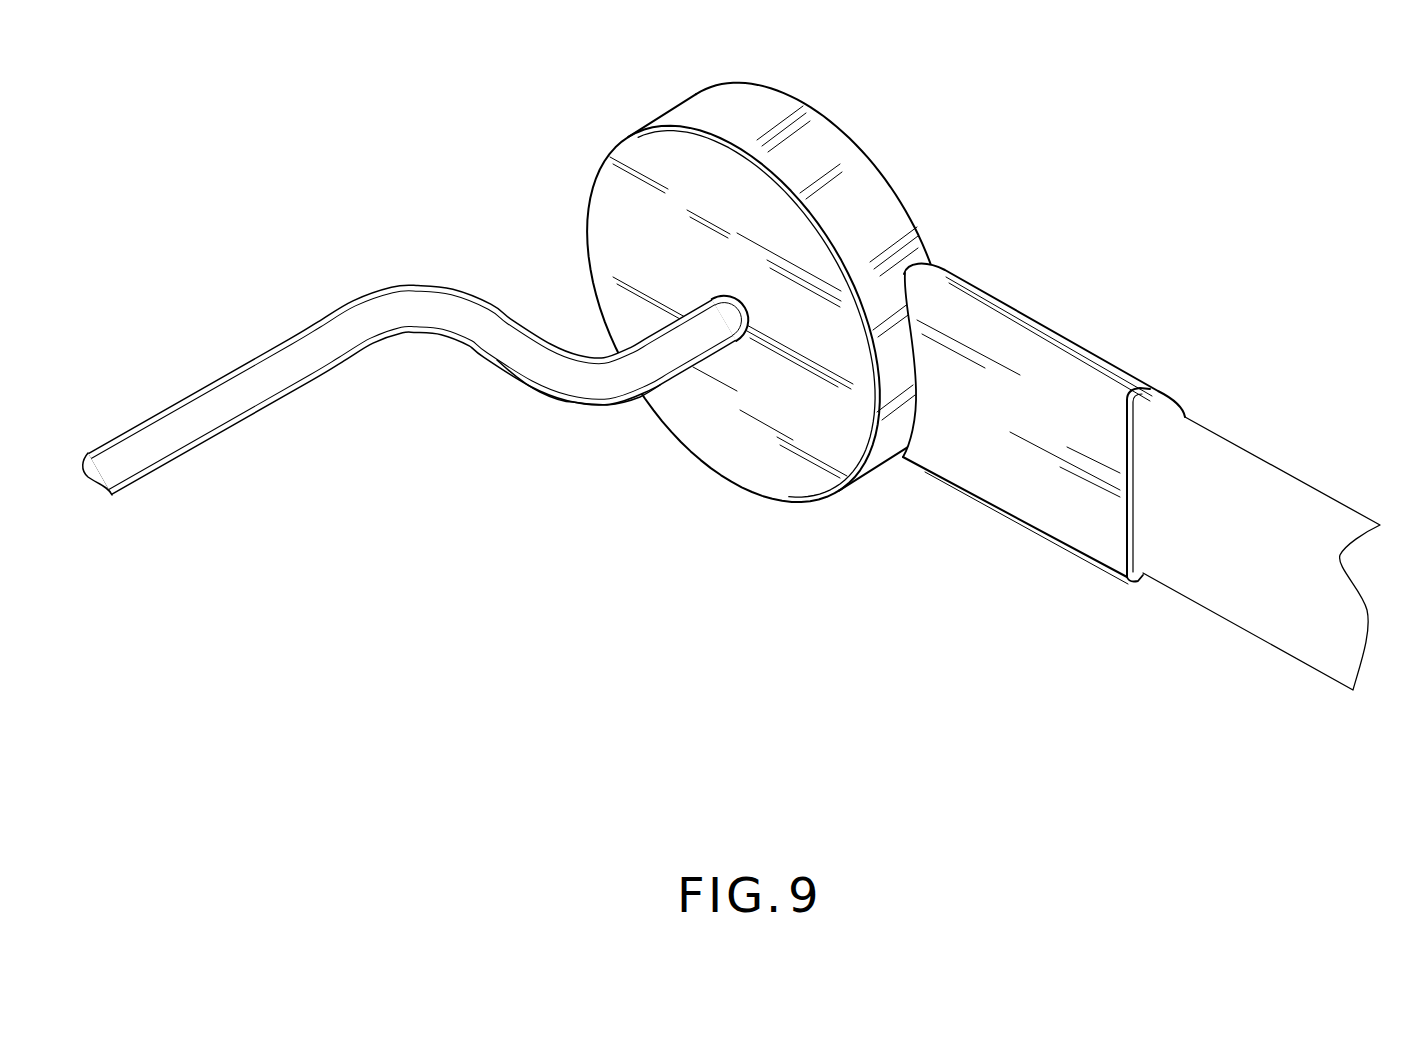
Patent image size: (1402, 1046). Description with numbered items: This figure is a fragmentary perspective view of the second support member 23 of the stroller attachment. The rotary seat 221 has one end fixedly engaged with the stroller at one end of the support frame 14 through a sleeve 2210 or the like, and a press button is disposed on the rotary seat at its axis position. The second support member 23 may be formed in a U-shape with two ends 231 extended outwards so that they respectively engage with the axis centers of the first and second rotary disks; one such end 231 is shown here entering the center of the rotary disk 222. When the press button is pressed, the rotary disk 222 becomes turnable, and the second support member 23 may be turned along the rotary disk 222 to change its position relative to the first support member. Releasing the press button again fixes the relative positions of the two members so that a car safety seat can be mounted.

The support frame 14 is at (1230, 475).
The rotary seat 221 is at (840, 150).
The rotary disk 222 is at (805, 480).
The sleeve 2210 is at (1077, 365).
The second support member 23 is at (372, 322).
The two ends 231 is at (620, 382).